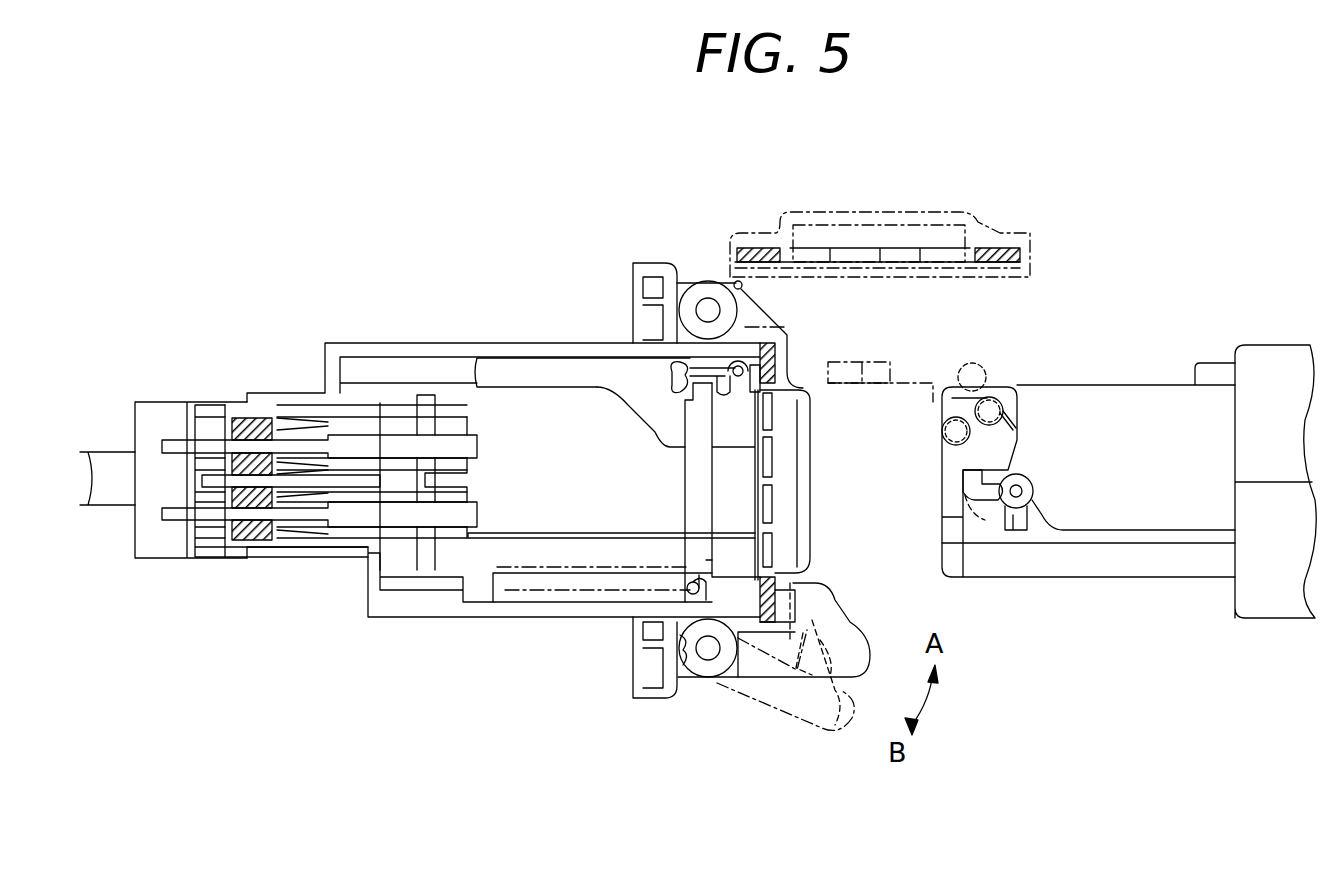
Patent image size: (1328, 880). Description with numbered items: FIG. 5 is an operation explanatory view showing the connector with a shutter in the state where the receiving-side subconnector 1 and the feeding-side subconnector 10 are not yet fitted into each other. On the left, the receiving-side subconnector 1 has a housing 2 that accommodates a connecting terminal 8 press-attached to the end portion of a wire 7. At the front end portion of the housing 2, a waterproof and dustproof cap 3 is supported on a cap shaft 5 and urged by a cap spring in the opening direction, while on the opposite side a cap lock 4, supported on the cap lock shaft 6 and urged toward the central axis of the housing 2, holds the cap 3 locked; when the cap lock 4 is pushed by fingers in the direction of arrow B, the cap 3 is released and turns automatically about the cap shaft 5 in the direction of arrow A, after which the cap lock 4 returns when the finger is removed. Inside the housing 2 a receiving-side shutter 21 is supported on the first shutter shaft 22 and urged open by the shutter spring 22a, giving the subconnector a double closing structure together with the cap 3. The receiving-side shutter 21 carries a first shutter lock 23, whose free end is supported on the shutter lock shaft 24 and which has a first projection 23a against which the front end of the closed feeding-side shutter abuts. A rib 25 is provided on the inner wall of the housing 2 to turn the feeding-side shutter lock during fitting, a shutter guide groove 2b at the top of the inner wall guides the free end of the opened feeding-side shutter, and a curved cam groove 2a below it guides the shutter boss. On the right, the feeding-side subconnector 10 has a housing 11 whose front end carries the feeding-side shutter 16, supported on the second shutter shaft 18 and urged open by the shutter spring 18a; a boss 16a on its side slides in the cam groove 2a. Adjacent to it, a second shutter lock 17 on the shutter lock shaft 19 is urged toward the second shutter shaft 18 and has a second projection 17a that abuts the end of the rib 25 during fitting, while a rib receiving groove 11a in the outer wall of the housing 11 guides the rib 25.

The receiving-side subconnector 1 is at (541, 262).
The housing 2 is at (409, 343).
The curved cam groove 2a is at (640, 418).
The shutter guide groove 2b is at (517, 368).
The waterproof and dustproof cap 3 is at (826, 215).
The cap lock 4 is at (855, 700).
The cap shaft 5 is at (708, 282).
The cap lock shaft 6 is at (708, 662).
The wire 7 is at (173, 512).
The connecting terminal 8 is at (470, 510).
The feeding-side subconnector 10 is at (1133, 318).
The housing 11 is at (1172, 383).
The rib receiving groove 11a is at (1098, 535).
The feeding-side shutter 16 is at (905, 368).
The boss 16a is at (970, 364).
The second shutter lock 17 is at (990, 505).
The second projection 17a is at (1015, 530).
The second shutter shaft 18 is at (998, 400).
The shutter spring 18a is at (1015, 415).
The shutter lock shaft 19 is at (1030, 478).
The receiving-side shutter 21 is at (685, 488).
The first shutter shaft 22 is at (688, 592).
The shutter spring 22a is at (712, 568).
The first shutter lock 23 is at (680, 365).
The first projection 23a is at (747, 370).
The shutter lock shaft 24 is at (748, 366).
The rib 25 is at (538, 530).